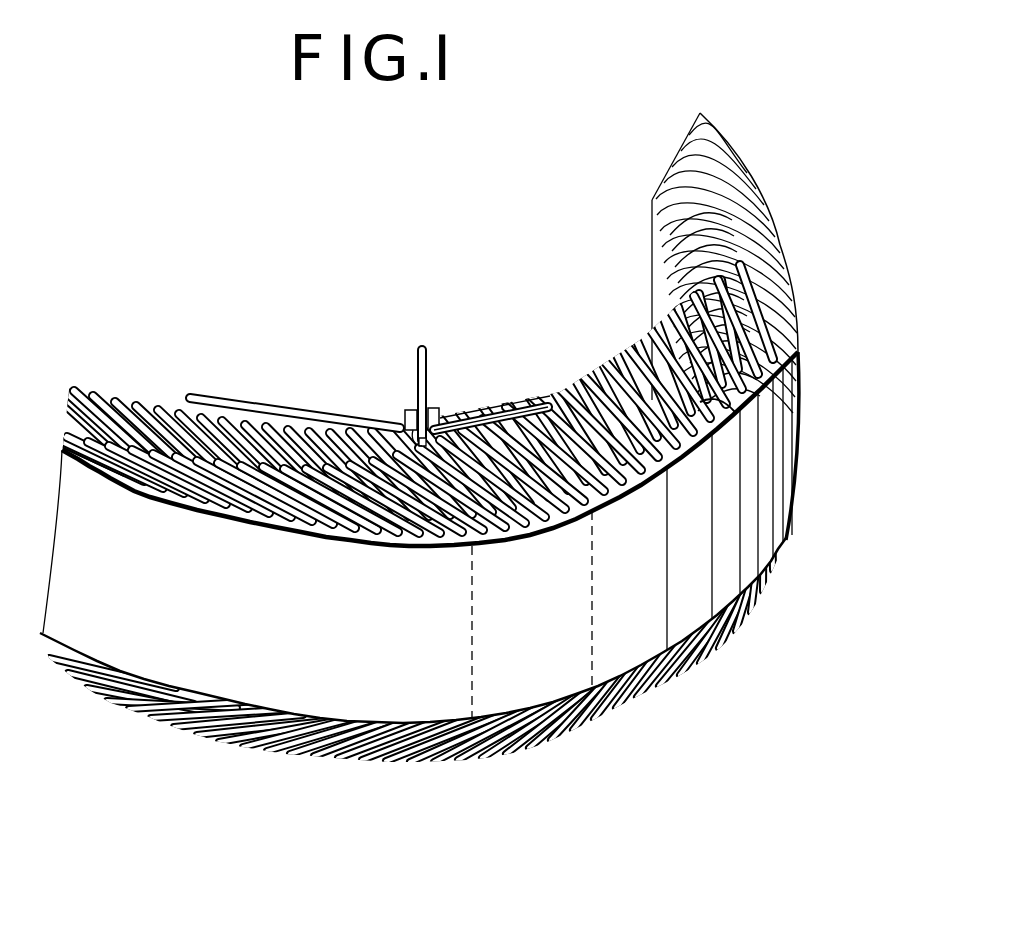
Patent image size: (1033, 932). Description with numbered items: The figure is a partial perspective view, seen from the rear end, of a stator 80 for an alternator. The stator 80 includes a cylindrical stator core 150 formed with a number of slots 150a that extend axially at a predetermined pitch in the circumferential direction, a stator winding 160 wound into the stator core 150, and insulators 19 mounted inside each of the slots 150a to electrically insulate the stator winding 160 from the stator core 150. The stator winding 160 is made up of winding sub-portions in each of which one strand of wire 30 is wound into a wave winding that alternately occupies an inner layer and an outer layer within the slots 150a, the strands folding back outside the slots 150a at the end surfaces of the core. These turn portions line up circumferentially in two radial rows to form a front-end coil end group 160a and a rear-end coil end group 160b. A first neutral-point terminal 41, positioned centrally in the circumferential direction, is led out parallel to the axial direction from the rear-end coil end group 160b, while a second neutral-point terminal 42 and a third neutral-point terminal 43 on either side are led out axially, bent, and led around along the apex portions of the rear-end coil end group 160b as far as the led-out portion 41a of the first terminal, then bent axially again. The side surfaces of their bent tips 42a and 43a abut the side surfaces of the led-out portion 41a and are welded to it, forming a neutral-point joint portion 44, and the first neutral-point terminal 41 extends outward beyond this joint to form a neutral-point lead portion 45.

The stator 80 is at (218, 228).
The stator winding 160 is at (755, 166).
The strand of wire 30 is at (762, 208).
The rear-end coil end group 160b is at (786, 248).
The stator core 150 is at (806, 381).
The slot 150a is at (735, 412).
The insulator 19 is at (688, 446).
The front-end coil end group 160a is at (748, 640).
The first neutral-point terminal 41 is at (428, 345).
The led-out portion 41a is at (439, 404).
The second neutral-point terminal 42 is at (353, 424).
The bent tip 42a is at (406, 416).
The third neutral-point terminal 43 is at (515, 408).
The bent tip 43a is at (437, 412).
The neutral-point joint portion 44 is at (452, 405).
The neutral-point lead portion 45 is at (413, 425).